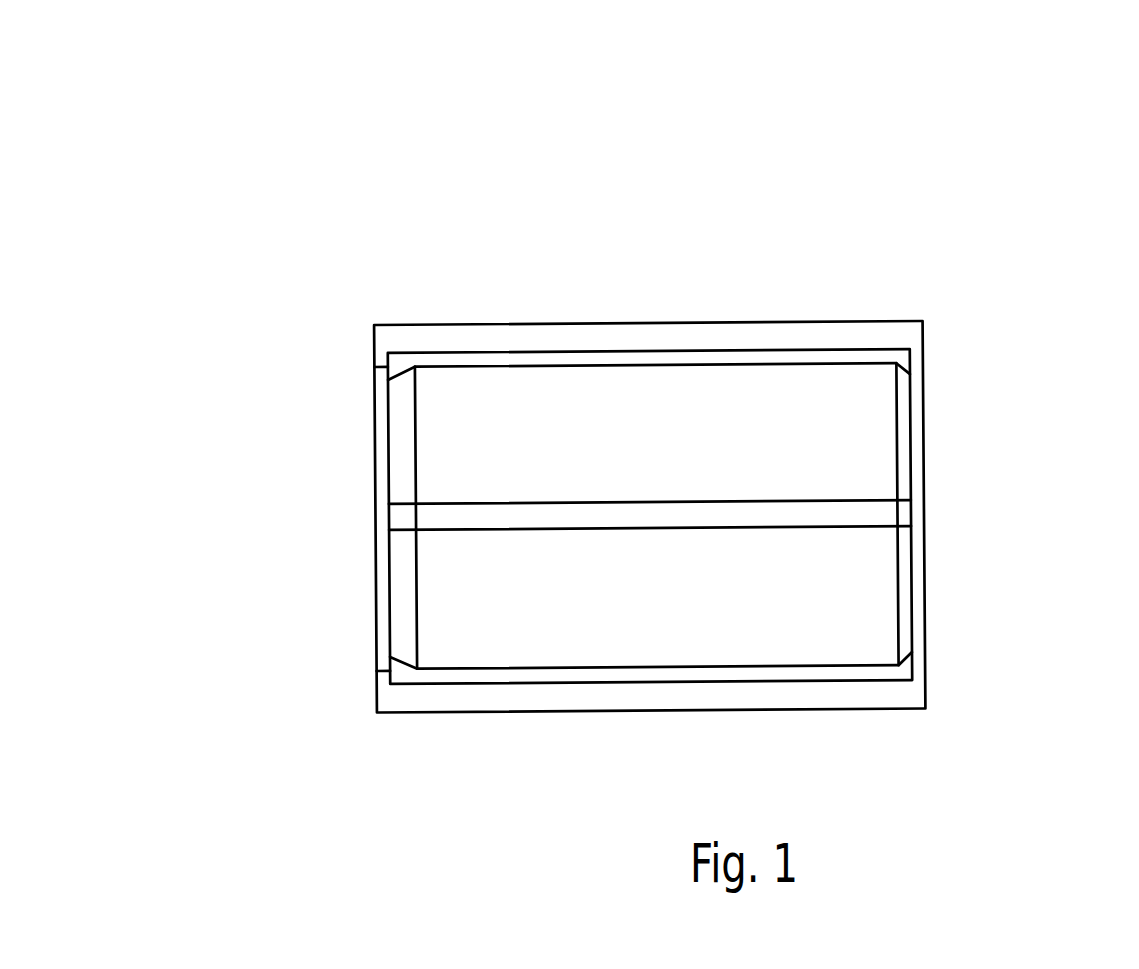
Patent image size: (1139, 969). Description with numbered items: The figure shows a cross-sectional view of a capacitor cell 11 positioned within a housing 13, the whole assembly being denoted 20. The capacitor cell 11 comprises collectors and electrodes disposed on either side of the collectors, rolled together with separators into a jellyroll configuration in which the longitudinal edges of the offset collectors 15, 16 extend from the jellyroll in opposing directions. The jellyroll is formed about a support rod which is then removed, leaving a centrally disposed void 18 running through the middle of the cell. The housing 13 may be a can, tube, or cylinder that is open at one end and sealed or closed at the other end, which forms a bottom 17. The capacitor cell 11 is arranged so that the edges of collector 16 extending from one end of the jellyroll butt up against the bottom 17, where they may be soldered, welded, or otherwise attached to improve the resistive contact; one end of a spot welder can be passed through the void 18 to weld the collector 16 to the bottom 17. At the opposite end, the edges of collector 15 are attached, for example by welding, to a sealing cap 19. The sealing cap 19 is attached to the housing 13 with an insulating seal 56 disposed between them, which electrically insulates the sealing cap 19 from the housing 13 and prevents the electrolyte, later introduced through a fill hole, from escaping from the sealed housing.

The display device 20 is at (262, 88).
The void 18 is at (680, 515).
The capacitor cell 11 is at (588, 365).
The housing 13 is at (777, 322).
The collector 15 is at (402, 380).
The collector 16 is at (897, 403).
The bottom 17 is at (927, 545).
The insulating seal 56 is at (388, 366).
The sealing cap 19 is at (382, 590).